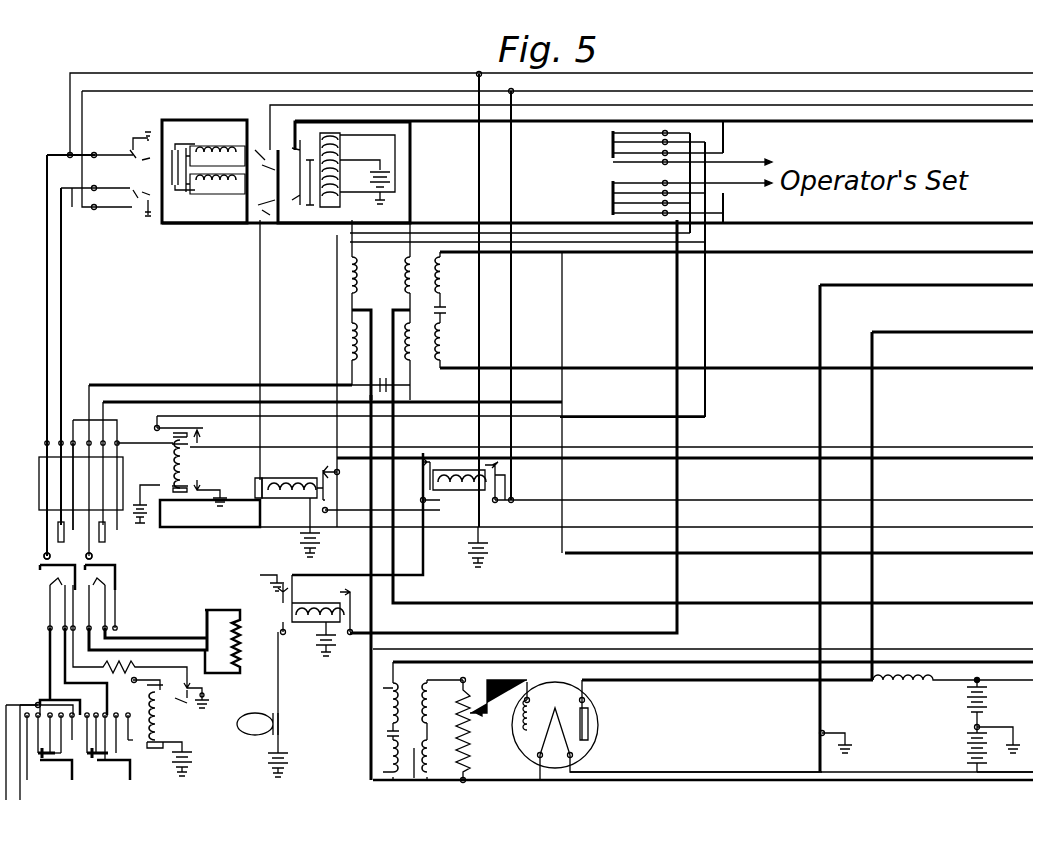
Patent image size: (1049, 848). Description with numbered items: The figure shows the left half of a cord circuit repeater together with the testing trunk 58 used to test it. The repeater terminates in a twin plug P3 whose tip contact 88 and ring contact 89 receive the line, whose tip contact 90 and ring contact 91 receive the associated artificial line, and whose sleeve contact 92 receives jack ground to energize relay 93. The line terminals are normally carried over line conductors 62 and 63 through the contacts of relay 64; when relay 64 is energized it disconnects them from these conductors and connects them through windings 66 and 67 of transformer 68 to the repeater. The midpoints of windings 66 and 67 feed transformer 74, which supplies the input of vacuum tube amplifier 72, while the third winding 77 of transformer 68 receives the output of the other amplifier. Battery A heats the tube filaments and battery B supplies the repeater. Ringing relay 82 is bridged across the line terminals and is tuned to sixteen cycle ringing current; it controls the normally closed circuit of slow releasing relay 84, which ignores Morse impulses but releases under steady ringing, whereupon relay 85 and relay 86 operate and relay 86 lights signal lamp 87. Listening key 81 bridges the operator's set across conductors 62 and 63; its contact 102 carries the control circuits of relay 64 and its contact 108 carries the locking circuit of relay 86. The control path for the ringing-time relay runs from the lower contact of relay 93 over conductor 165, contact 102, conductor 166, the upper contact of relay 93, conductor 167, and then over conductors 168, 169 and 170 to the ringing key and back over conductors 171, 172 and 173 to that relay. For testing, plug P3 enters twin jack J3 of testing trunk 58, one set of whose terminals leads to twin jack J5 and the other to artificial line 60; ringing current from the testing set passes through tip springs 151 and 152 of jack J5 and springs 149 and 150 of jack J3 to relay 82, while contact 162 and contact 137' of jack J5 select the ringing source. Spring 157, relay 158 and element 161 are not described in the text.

The conductor 170 is at (920, 62).
The conductor 171 is at (940, 91).
The line conductor 62 is at (1010, 121).
The line conductor 63 is at (1002, 223).
The ringing relay 82 is at (204, 171).
The relay 64 is at (316, 178).
The contact of listening key 102 is at (613, 143).
The listening key 81 is at (610, 185).
The contact of listening key 108 is at (613, 208).
The winding of transformer 66 is at (347, 280).
The conductor 165 is at (338, 350).
The winding of transformer 67 is at (404, 270).
The transformer 68 is at (387, 342).
The third winding of transformer 77 is at (449, 275).
The conductor 169 is at (482, 325).
The conductor 172 is at (508, 345).
The conductor 166 is at (708, 333).
The conductor 167 is at (735, 447).
The conductor 168 is at (742, 462).
The conductor 173 is at (910, 500).
The twin plug P3 is at (39, 477).
The sleeve contact 92 is at (70, 520).
The ring contact 89 is at (58, 532).
The tip contact 88 is at (44, 556).
The ring contact 91 is at (105, 532).
The tip contact 90 is at (92, 556).
The relay 93 is at (189, 470).
The slow releasing relay 84 is at (297, 511).
The relay 85 is at (467, 512).
The relay 86 is at (306, 615).
The signal lamp 87 is at (278, 726).
The transformer 74 is at (455, 736).
The vacuum tube amplifier 72 is at (588, 728).
The battery B is at (962, 694).
The battery A is at (965, 752).
The twin jack J3 is at (120, 605).
The spring of jack 149 is at (50, 590).
The spring of jack 150 is at (64, 610).
The jack spring 157 is at (73, 618).
The artificial line 60 is at (220, 630).
The testing trunk 58 is at (62, 700).
The relay 158 is at (172, 725).
The twin jack J5 is at (88, 790).
The jack spring 161 is at (110, 755).
The tip spring 152 is at (105, 763).
The contact of jack 137' is at (144, 780).
The contact of jack 162 is at (35, 765).
The tip spring 151 is at (58, 762).